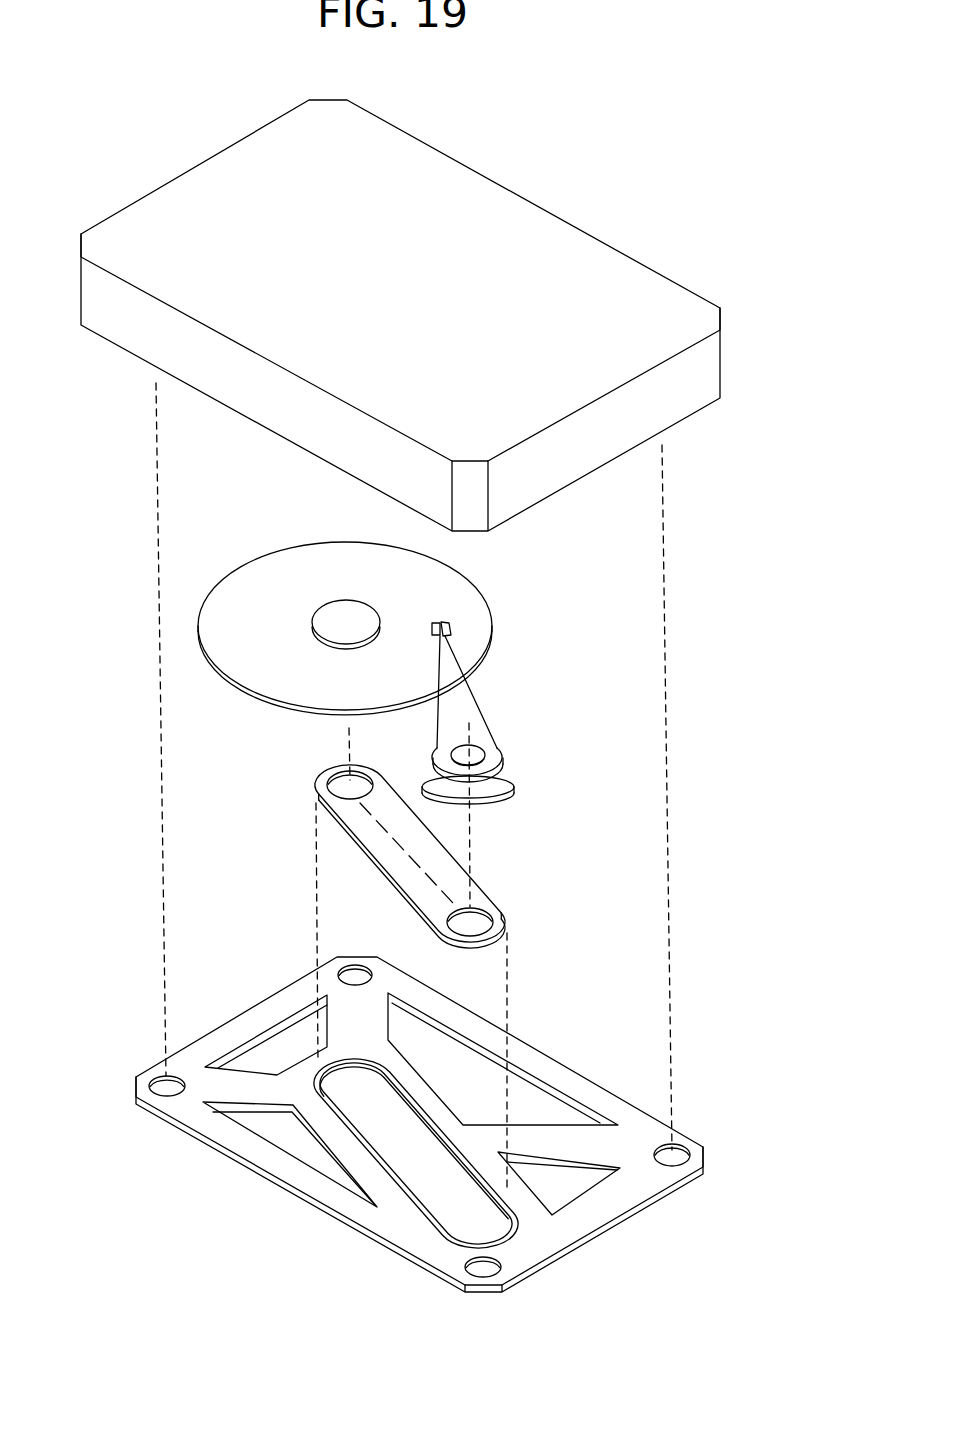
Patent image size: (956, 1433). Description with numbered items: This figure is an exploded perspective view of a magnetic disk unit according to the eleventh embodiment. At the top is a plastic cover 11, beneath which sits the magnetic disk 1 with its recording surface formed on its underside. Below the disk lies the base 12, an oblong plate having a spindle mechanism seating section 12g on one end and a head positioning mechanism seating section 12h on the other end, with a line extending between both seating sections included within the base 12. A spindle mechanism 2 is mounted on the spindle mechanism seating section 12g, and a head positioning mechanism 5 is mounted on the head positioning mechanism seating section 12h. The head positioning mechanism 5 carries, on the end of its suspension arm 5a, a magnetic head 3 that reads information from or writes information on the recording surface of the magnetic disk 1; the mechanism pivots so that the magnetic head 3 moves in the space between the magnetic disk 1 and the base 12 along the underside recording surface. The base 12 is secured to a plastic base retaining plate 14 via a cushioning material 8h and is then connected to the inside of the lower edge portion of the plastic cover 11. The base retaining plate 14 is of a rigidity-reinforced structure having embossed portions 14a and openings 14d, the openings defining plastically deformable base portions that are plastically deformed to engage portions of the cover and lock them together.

The plastic cover 11 is at (440, 230).
The magnetic disk 1 is at (287, 690).
The spindle mechanism 2 is at (335, 622).
The magnetic head 3 is at (453, 620).
The suspension arm 5a is at (455, 695).
The head positioning mechanism 5 is at (480, 753).
The base 12 is at (409, 863).
The spindle mechanism seating section 12g is at (325, 793).
The head positioning mechanism seating section 12h is at (493, 923).
The base retaining plate 14 is at (385, 1124).
The openings 14d is at (155, 1078).
The embossed portions 14a is at (245, 1128).
The cushioning material 8h is at (370, 1155).